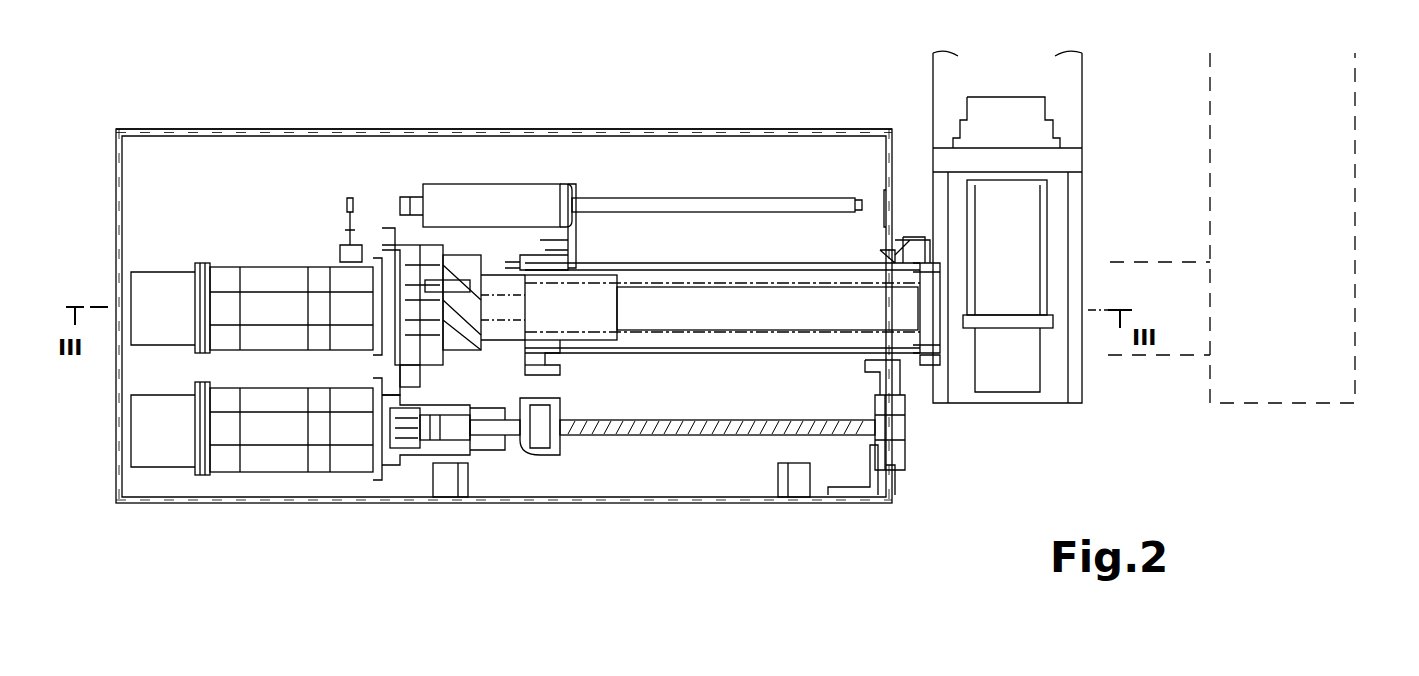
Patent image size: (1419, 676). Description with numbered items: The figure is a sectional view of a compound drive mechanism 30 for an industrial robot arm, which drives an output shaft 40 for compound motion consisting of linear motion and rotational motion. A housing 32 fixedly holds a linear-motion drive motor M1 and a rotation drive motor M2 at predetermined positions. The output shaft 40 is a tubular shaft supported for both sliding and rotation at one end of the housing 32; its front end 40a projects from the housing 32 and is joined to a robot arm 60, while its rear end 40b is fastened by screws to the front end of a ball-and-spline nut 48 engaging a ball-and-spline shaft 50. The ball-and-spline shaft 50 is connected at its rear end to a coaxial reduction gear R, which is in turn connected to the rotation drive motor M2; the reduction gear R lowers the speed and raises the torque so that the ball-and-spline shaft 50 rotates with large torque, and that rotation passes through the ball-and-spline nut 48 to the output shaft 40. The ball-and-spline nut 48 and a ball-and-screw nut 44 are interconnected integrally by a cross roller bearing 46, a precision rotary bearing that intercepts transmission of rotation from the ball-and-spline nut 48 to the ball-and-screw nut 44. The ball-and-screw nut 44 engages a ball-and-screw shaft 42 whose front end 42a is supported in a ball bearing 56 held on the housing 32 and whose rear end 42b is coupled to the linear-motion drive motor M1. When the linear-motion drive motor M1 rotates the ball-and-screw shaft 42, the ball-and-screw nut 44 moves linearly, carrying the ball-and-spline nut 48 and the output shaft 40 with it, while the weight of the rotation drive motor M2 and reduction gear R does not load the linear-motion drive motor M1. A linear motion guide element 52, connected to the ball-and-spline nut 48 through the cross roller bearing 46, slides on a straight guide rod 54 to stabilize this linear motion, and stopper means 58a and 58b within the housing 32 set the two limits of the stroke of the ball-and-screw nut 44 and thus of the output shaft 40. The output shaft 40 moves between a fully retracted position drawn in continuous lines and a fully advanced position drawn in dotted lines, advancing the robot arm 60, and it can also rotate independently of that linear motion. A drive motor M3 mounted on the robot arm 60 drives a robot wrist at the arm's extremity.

The compound drive mechanism 30 is at (382, 108).
The housing 32 is at (440, 129).
The output shaft 40 is at (735, 264).
The front end of the output shaft 40a is at (935, 380).
The rear end of the output shaft 40b is at (575, 250).
The ball-and-screw shaft 42 is at (641, 440).
The front end of the ball-and-screw shaft 42a is at (905, 460).
The rear end of the ball-and-screw shaft 42b is at (490, 440).
The ball-and-screw nut 44 is at (543, 435).
The cross roller bearing 46 is at (570, 365).
The ball-and-spline nut 48 is at (612, 285).
The ball-and-spline shaft 50 is at (727, 318).
The linear motion guide element 52 is at (530, 185).
The straight guide rod 54 is at (641, 210).
The ball bearing 56 is at (898, 425).
The stopper means 58a is at (798, 483).
The stopper means 58b is at (445, 483).
The robot arm 60 is at (1082, 222).
The linear-motion drive motor M1 is at (272, 462).
The rotation drive motor M2 is at (250, 272).
The drive motor M3 is at (1082, 262).
The reduction gear R is at (392, 240).